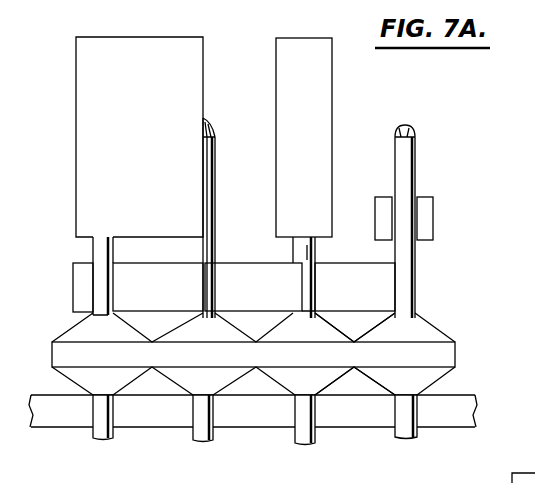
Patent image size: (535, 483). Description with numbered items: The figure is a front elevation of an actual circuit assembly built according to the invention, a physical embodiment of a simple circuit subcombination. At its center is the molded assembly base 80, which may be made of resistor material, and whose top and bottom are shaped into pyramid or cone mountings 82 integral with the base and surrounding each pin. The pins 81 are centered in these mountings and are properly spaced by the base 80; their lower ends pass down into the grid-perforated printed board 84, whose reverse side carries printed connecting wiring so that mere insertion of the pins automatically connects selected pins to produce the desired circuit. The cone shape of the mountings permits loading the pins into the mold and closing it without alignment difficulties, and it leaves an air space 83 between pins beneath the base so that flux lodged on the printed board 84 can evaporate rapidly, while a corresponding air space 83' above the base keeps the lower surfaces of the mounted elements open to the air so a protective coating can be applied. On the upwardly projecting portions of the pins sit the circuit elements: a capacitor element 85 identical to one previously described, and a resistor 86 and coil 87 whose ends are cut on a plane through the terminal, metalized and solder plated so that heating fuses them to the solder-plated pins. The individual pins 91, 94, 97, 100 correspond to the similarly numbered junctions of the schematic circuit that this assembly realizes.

The assembly base 80 is at (428, 353).
The pins 81 is at (200, 415).
The pyramid or cone mountings 82 is at (433, 326).
The air space 83 is at (355, 411).
The air space 83' is at (355, 313).
The printed board 84 is at (60, 412).
The capacitor element 85 is at (310, 103).
The resistor 86 is at (423, 222).
The coil 87 is at (249, 287).
The pin 91 is at (108, 250).
The pin 94 is at (203, 252).
The pin 97 is at (303, 257).
The pin 100 is at (408, 177).